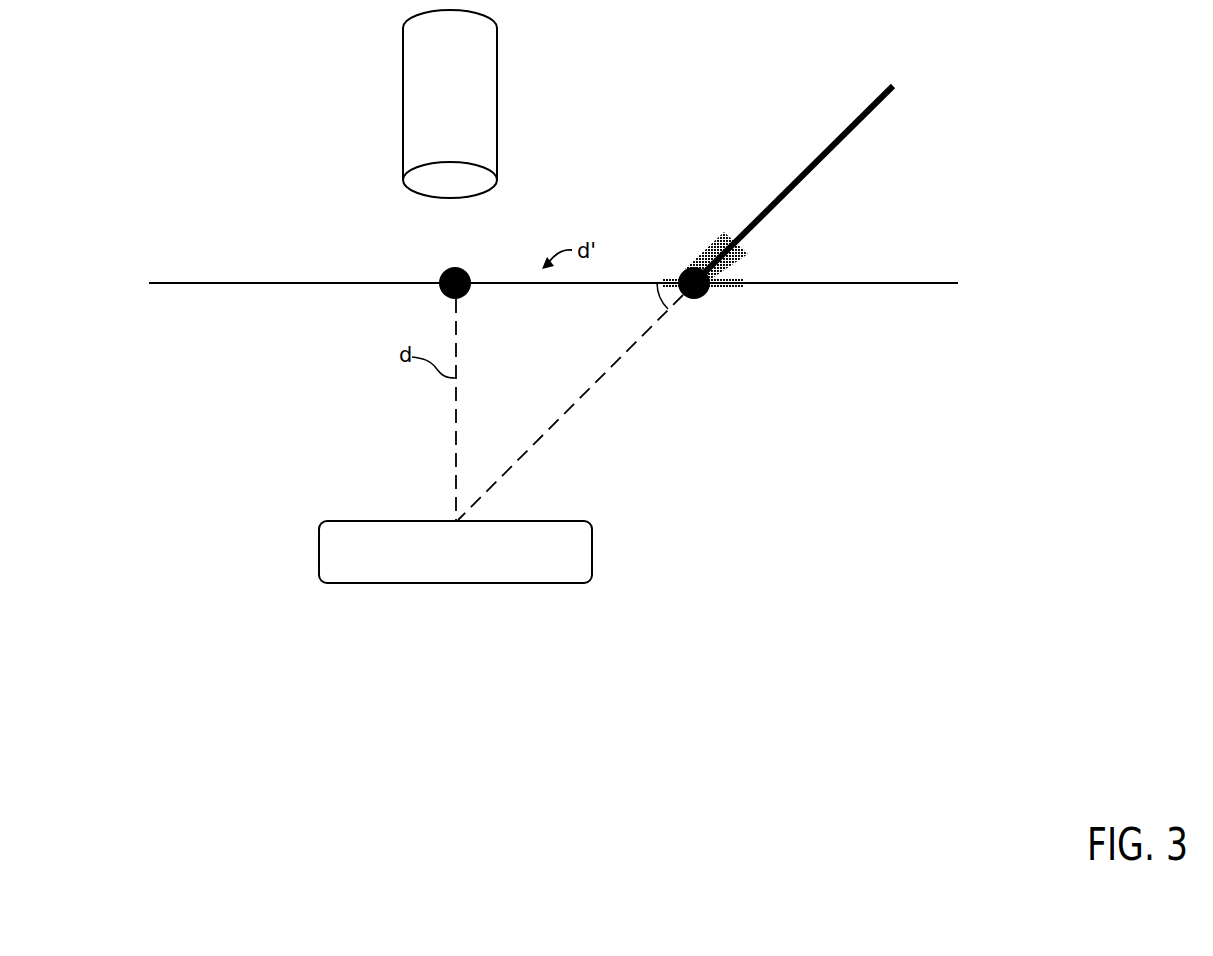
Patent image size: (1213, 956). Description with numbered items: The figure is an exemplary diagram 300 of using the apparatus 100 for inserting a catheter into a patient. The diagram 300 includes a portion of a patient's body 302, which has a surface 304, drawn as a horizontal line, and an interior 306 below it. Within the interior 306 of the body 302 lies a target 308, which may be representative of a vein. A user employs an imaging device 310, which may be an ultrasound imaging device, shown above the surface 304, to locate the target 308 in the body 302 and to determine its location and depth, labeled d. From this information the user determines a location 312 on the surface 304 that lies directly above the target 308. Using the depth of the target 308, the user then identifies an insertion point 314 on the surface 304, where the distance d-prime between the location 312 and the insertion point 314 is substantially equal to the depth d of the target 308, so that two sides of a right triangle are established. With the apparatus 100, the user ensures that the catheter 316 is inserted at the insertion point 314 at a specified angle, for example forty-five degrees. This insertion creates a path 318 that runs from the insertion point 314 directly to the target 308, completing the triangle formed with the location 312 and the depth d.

The diagram 300 is at (205, 49).
The body 302 is at (344, 229).
The surface 304 is at (250, 283).
The interior 306 is at (215, 397).
The target 308 is at (455, 552).
The imaging device 310 is at (497, 93).
The location 312 is at (466, 270).
The insertion point 314 is at (680, 270).
The catheter 316 is at (826, 148).
The path 318 is at (604, 370).
The apparatus 100 is at (710, 242).